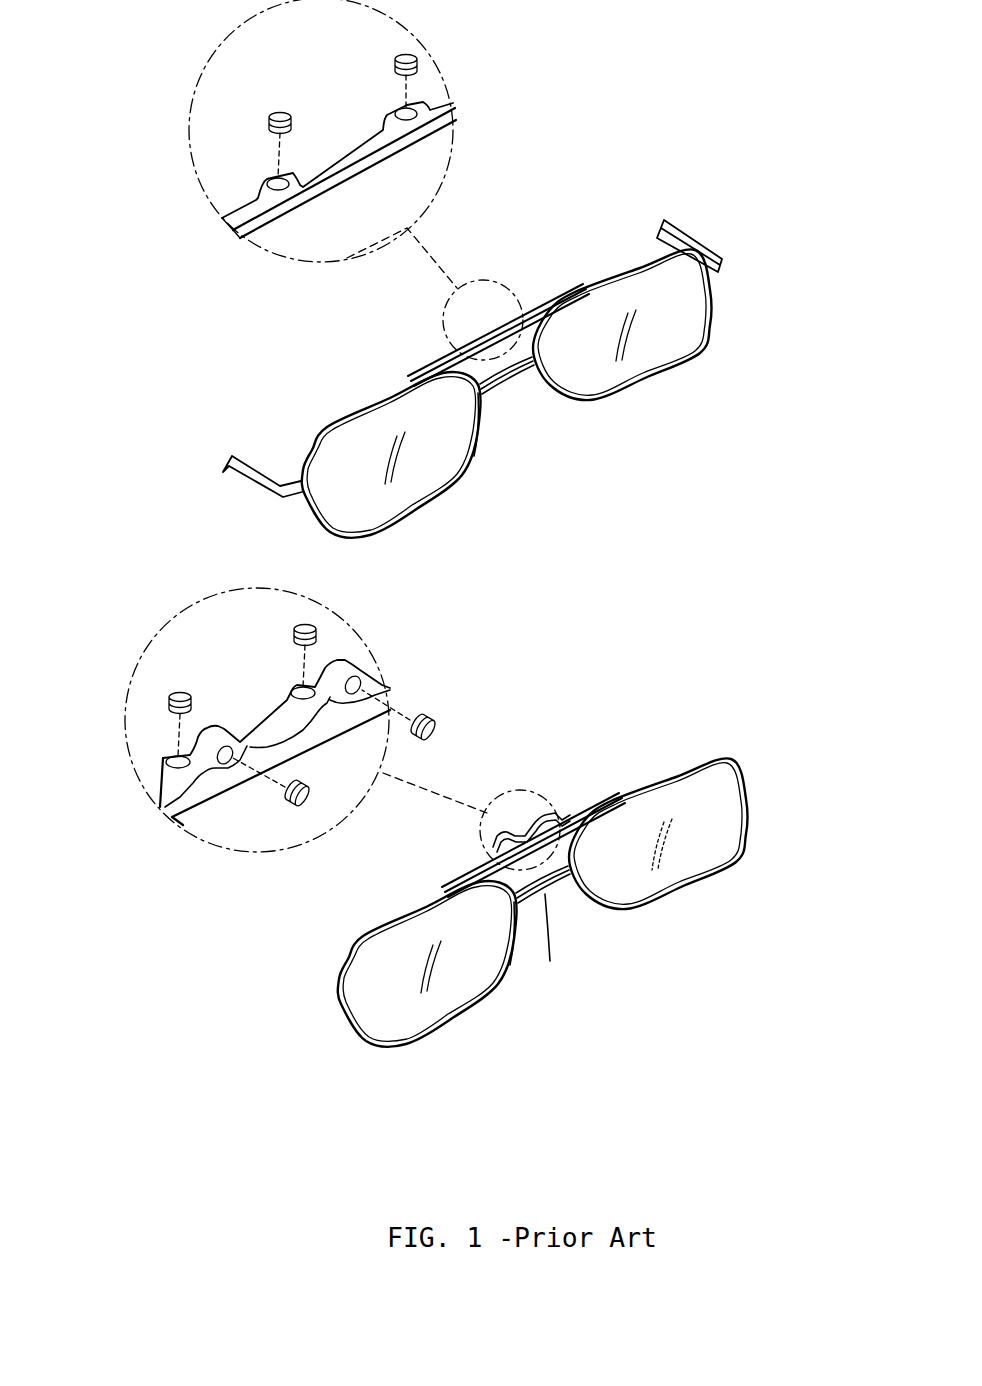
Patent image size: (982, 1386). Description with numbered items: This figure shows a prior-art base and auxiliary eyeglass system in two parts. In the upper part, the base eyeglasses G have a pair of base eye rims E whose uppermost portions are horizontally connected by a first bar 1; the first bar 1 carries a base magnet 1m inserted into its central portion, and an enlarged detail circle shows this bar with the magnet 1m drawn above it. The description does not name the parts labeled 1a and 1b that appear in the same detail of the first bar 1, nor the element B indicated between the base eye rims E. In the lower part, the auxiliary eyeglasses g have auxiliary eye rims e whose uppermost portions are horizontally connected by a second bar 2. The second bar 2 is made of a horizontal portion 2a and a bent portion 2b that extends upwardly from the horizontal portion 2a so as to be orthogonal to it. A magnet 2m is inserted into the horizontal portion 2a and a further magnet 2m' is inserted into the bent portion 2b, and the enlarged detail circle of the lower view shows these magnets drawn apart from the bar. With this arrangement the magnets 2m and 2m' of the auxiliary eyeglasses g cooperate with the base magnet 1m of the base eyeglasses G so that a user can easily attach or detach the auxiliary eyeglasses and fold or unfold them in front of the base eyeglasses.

The base eyeglasses G is at (534, 331).
The base eye rims E is at (657, 380).
The bridge B is at (509, 385).
The first bar 1 is at (577, 262).
The mounting plate 1a is at (403, 147).
The eyelet hole 1b is at (450, 97).
The base magnet 1m is at (273, 118).
The auxiliary eyeglasses g is at (594, 855).
The auxiliary eye rims e is at (669, 856).
The second bar 2 is at (565, 790).
The horizontal portion 2a is at (270, 727).
The bent portion 2b is at (350, 712).
The magnet 2m is at (176, 688).
The magnet 2m' is at (335, 811).